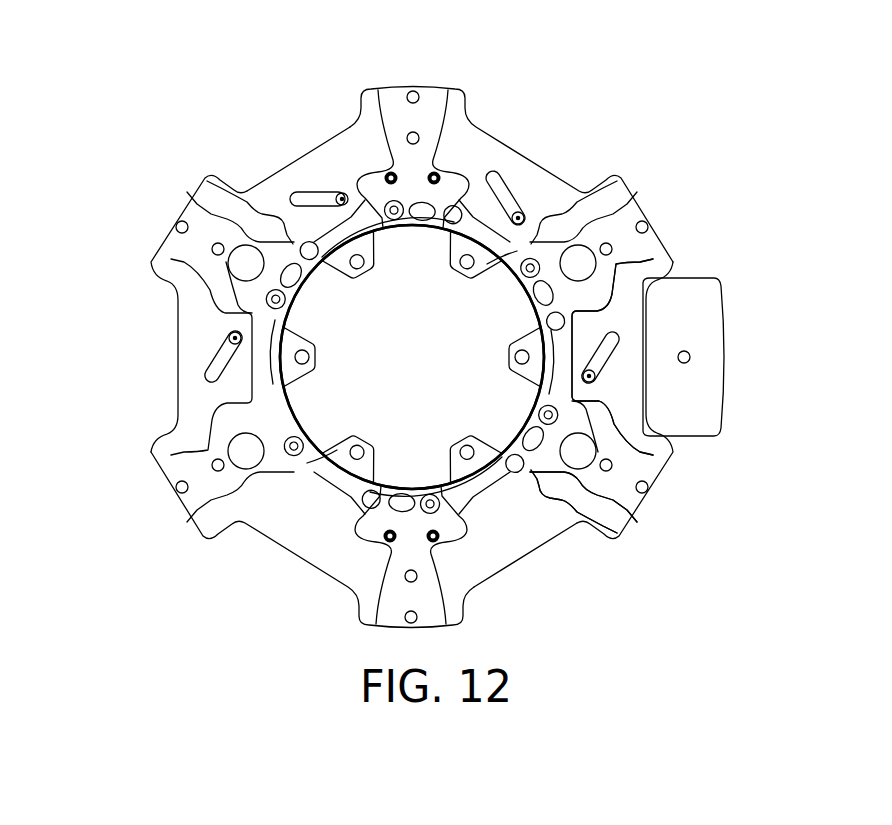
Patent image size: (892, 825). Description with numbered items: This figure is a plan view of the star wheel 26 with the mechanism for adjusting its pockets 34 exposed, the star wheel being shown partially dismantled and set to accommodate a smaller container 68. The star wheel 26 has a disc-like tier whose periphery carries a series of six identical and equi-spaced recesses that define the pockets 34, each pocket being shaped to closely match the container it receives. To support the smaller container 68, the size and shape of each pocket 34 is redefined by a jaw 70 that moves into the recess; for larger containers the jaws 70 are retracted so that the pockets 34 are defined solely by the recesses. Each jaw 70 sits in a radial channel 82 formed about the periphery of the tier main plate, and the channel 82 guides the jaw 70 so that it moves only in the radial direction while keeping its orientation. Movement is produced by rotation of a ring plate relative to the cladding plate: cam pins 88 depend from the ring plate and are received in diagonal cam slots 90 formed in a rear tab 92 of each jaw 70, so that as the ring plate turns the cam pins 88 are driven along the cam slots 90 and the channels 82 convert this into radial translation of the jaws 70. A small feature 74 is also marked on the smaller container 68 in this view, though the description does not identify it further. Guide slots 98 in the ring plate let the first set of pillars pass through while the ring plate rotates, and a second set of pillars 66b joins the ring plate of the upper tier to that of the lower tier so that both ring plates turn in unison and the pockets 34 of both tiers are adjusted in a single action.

The star wheel 26 is at (430, 346).
The pocket 34 is at (400, 346).
The second set of pillars 66b is at (549, 320).
The smaller container 68 is at (670, 317).
The jaw 70 is at (502, 163).
The pivot hole 74 is at (691, 357).
The radial channel 82 is at (213, 413).
The cam pin 88 is at (335, 197).
The diagonal cam slot 90 is at (283, 168).
The rear tab 92 is at (535, 216).
The guide slot 98 is at (538, 293).